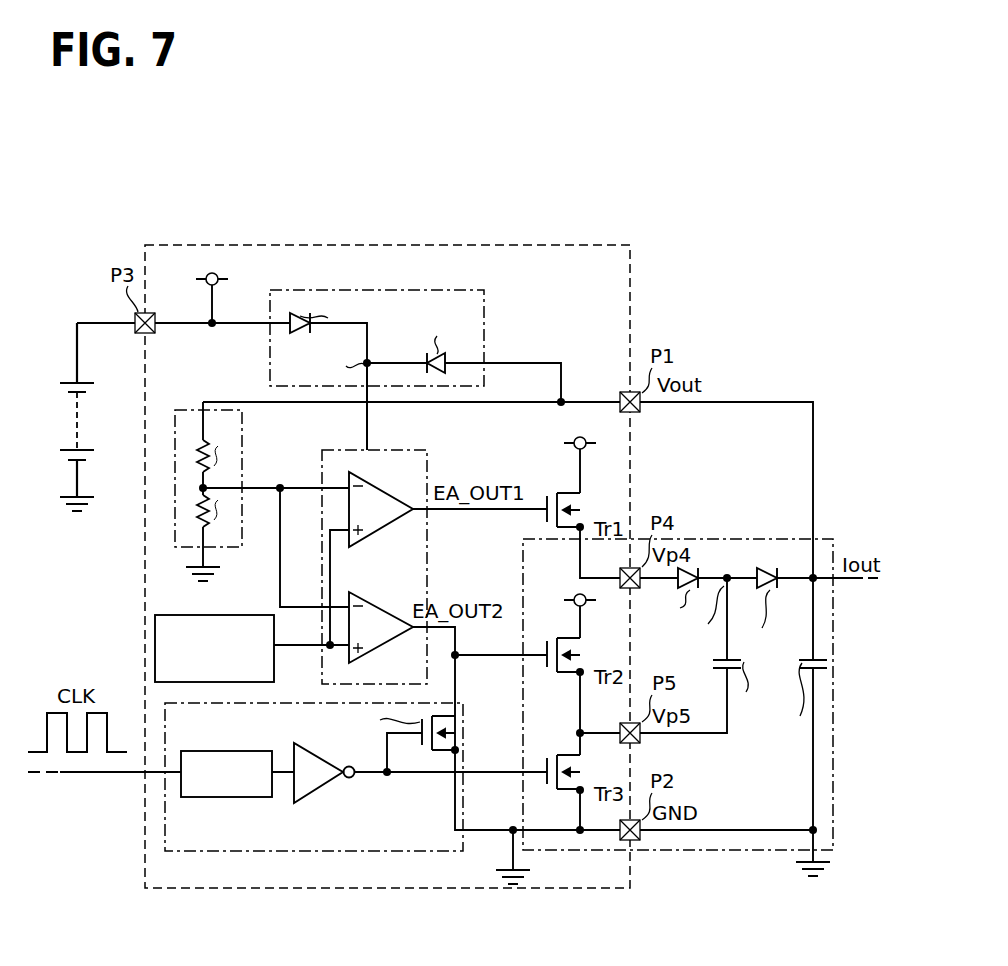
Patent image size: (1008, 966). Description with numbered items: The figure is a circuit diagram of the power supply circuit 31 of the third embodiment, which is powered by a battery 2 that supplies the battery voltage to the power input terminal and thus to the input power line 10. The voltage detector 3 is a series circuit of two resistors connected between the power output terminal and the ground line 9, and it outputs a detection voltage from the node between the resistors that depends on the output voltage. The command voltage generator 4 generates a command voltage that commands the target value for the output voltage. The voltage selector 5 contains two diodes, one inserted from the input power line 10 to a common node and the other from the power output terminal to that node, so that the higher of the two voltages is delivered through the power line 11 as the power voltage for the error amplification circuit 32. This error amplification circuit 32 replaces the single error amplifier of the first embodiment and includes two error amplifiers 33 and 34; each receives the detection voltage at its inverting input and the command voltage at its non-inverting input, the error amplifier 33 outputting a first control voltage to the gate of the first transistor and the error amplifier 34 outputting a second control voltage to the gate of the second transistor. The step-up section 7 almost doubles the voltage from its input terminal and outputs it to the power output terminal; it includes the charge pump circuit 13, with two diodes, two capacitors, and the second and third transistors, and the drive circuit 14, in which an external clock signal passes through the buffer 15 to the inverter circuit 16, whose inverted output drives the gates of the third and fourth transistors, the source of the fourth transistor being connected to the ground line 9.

The battery 2 is at (64, 428).
The voltage detector 3 is at (196, 410).
The command voltage generator 4 is at (208, 614).
The voltage selector 5 is at (420, 290).
The step-up section 7 is at (532, 908).
The ground line 9 is at (206, 553).
The input power line 10 is at (220, 282).
The power line 11 is at (369, 417).
The charge pump circuit 13 is at (755, 539).
The drive circuit 14 is at (314, 795).
The buffer 15 is at (232, 798).
The inverter circuit 16 is at (325, 790).
The power supply circuit 31 is at (462, 206).
The error amplification circuit 32 is at (392, 553).
The error amplifier 33 is at (386, 494).
The error amplifier 34 is at (376, 614).